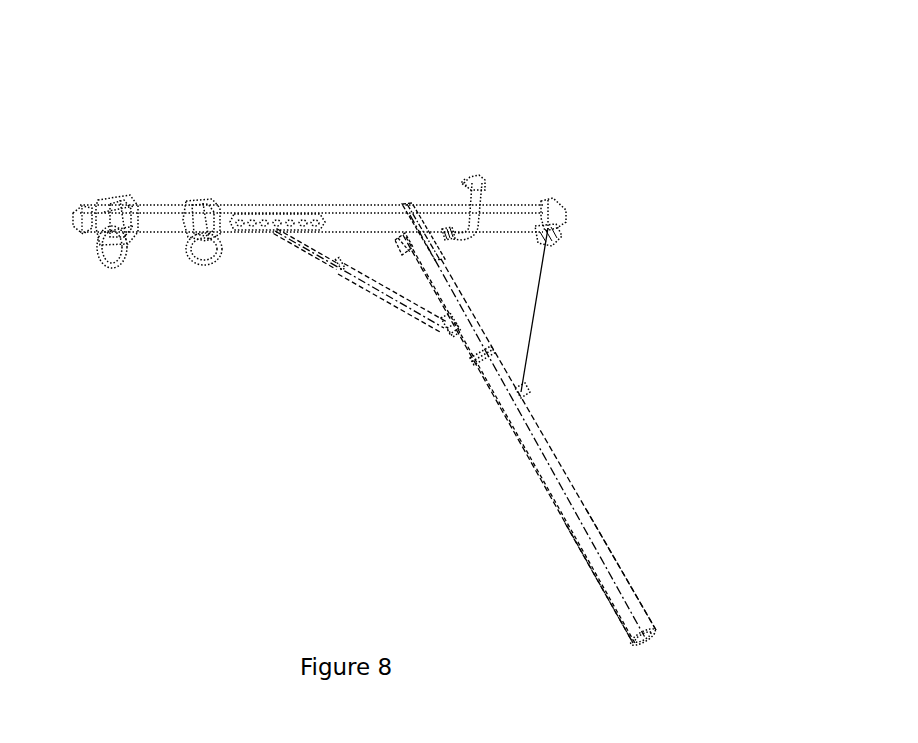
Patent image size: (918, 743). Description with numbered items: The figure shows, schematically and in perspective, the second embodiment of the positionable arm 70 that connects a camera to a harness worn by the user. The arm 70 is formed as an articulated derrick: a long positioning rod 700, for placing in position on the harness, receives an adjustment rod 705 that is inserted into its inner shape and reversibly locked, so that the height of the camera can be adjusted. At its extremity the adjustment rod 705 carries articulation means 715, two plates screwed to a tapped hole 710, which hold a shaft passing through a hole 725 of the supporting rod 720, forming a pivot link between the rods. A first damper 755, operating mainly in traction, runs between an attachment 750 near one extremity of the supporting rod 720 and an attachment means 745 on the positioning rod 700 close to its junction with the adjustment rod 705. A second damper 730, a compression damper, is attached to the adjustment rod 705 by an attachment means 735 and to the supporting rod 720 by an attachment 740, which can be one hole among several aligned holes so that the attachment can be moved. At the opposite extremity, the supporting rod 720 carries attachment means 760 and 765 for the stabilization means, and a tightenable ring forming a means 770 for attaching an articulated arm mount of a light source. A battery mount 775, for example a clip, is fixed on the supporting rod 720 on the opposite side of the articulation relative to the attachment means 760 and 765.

The positionable arm 70 is at (276, 132).
The positioning rod 700 is at (630, 597).
The adjustment rod 705 is at (452, 294).
The tapped hole 710 is at (430, 251).
The articulation means 715 is at (412, 228).
The supporting rod 720 is at (338, 205).
The hole 725 is at (406, 207).
The second damper 730 is at (352, 278).
The attachment means of the second damper 735 is at (457, 337).
The attachment of the second damper 740 is at (262, 232).
The attachment means of the first damper 745 is at (523, 393).
The attachment of the first damper 750 is at (555, 213).
The first damper 755 is at (535, 298).
The attachment means 760 is at (210, 263).
The attachment means 765 is at (122, 263).
The means for attaching an articulated arm mount 770 is at (126, 200).
The battery mount 775 is at (474, 180).